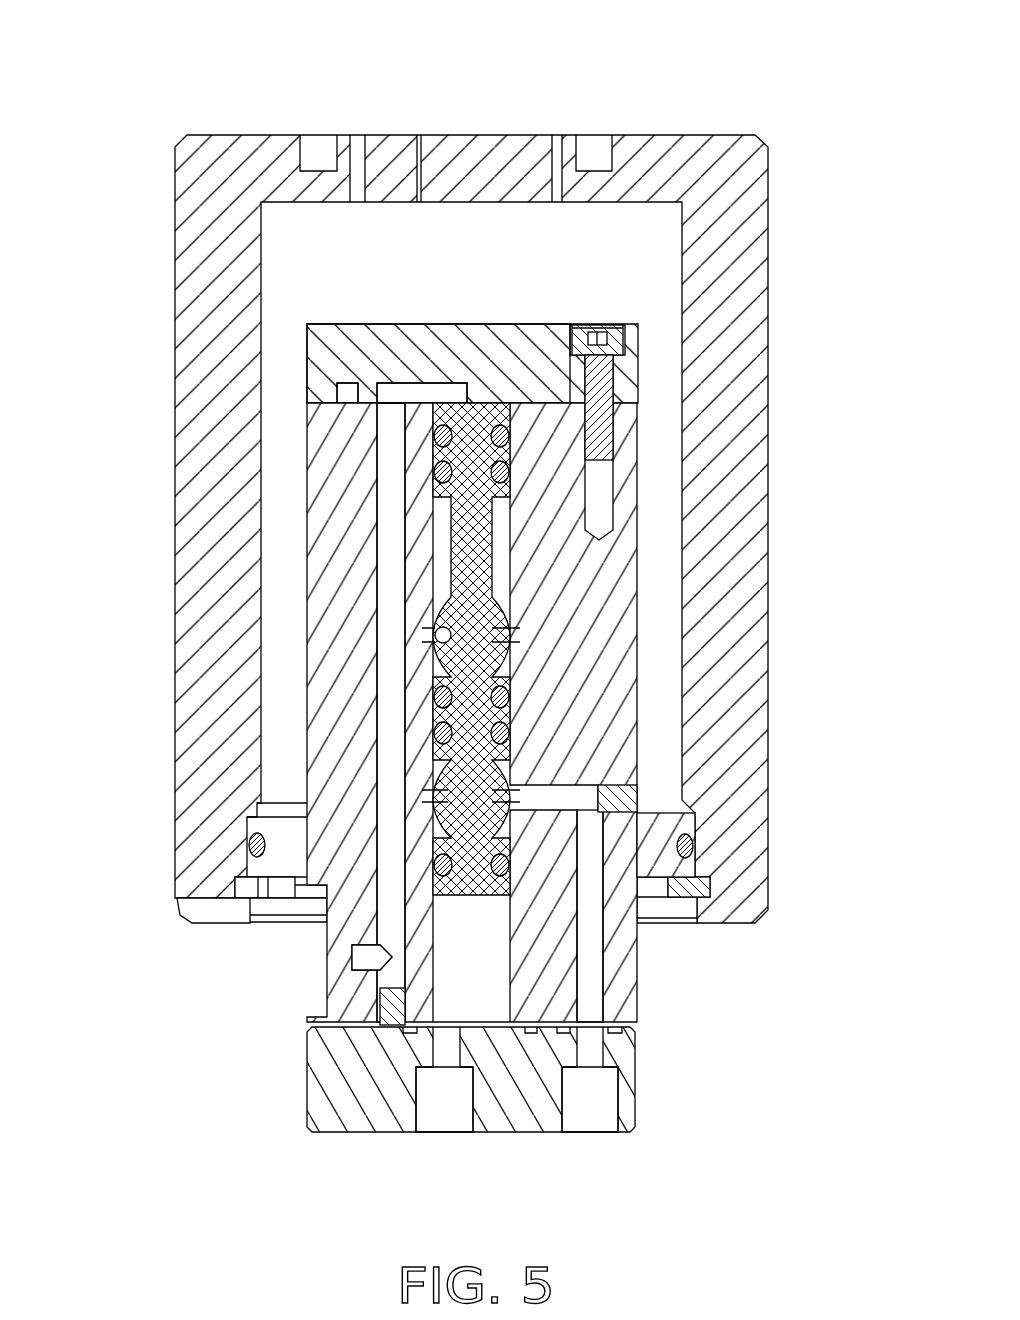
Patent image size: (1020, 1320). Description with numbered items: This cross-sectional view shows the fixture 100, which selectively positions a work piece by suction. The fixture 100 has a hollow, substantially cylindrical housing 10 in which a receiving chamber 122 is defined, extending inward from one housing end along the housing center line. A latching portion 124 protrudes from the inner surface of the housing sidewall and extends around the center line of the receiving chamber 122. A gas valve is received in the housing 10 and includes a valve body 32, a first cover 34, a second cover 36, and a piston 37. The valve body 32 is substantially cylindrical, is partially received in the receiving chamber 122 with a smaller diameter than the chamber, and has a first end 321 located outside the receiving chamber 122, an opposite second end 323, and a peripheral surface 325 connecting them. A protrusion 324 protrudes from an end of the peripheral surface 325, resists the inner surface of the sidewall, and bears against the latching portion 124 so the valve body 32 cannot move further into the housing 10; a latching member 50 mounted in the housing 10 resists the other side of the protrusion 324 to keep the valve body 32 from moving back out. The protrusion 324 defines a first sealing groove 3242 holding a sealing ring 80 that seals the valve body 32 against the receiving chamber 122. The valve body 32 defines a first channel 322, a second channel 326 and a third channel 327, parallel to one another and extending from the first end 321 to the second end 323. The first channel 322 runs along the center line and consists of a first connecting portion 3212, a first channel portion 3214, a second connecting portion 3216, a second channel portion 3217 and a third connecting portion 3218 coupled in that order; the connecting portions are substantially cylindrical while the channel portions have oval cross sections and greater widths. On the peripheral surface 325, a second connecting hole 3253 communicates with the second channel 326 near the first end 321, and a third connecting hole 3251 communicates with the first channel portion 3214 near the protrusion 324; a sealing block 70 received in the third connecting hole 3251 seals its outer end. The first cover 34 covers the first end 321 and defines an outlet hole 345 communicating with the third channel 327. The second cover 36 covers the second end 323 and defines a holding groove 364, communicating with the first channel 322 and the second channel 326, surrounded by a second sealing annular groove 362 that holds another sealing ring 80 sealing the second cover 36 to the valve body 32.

The fixture 100 is at (506, 17).
The housing 10 is at (212, 235).
The receiving chamber 122 is at (648, 265).
The latching portion 124 is at (258, 812).
The first sealing groove 3242 is at (250, 843).
The first end 321 is at (310, 1040).
The latching member 50 is at (683, 913).
The second cover 36 is at (492, 350).
The second end 323 is at (316, 368).
The second sealing annular groove 362 is at (347, 380).
The holding groove 364 is at (422, 393).
The peripheral surface 325 is at (305, 682).
The second channel 326 is at (388, 642).
The third channel 327 is at (590, 962).
The third connecting hole 3251 is at (563, 795).
The second connecting hole 3253 is at (385, 957).
The sealing block 70 is at (387, 1033).
The valve body 32 is at (618, 462).
The piston 37 is at (483, 649).
The third connecting portion 3218 is at (503, 551).
The second channel portion 3217 is at (503, 612).
The first channel portion 3214 is at (433, 778).
The second connecting portion 3216 is at (512, 723).
The protrusion 324 is at (670, 828).
The sealing ring 80 is at (695, 847).
The first cover 34 is at (627, 1115).
The outlet hole 345 is at (600, 1105).
The first channel 322 is at (463, 990).
The first connecting portion 3212 is at (487, 970).